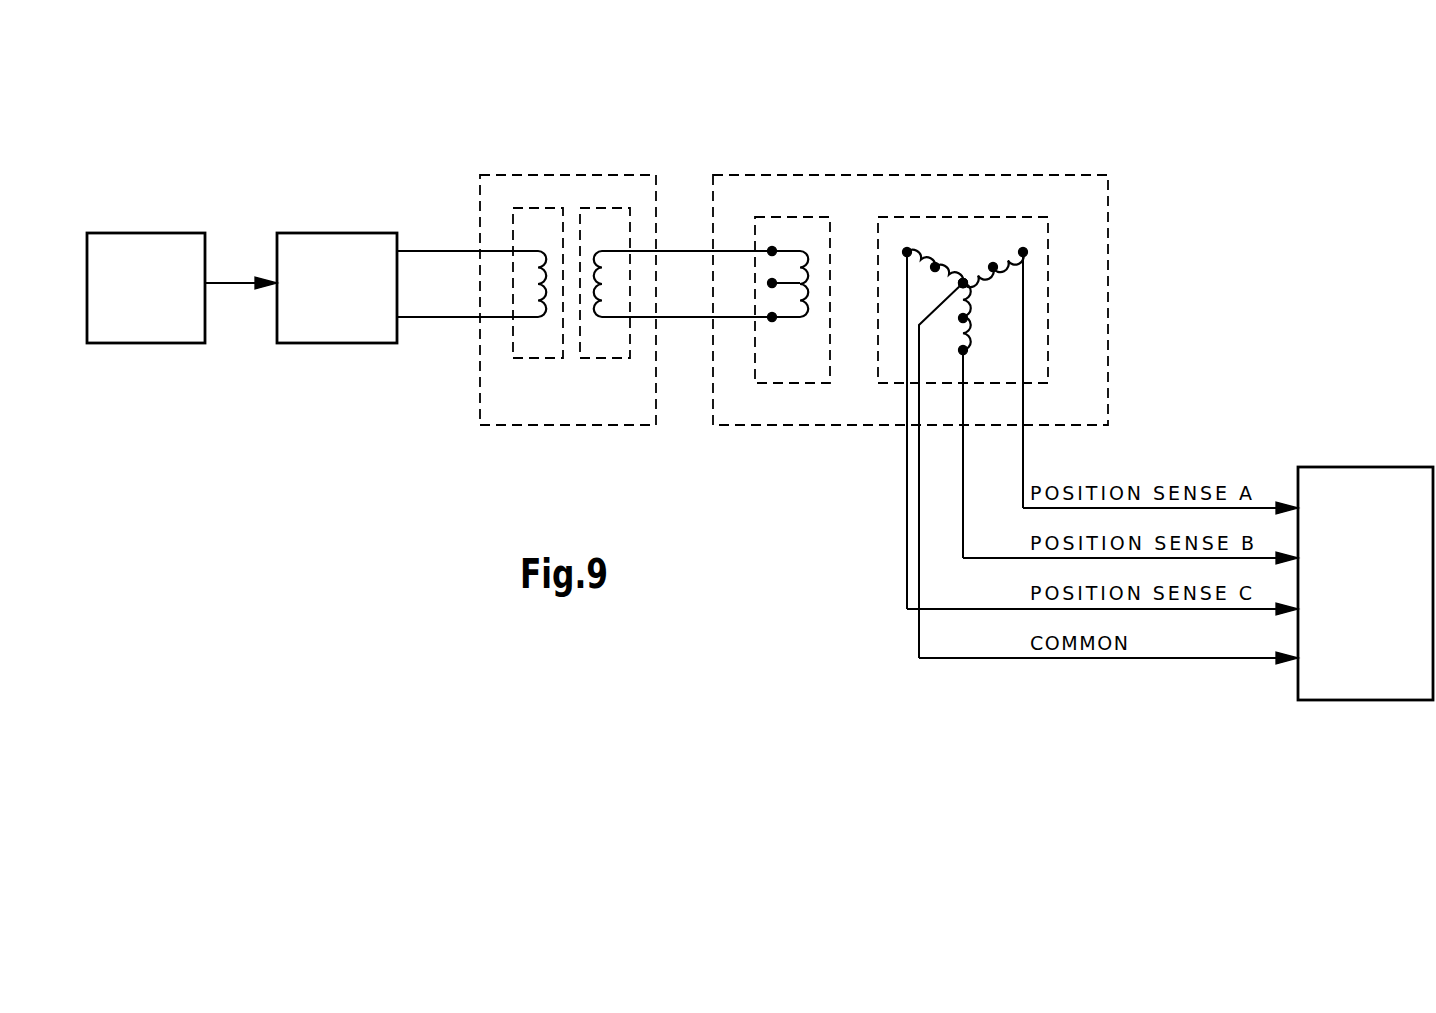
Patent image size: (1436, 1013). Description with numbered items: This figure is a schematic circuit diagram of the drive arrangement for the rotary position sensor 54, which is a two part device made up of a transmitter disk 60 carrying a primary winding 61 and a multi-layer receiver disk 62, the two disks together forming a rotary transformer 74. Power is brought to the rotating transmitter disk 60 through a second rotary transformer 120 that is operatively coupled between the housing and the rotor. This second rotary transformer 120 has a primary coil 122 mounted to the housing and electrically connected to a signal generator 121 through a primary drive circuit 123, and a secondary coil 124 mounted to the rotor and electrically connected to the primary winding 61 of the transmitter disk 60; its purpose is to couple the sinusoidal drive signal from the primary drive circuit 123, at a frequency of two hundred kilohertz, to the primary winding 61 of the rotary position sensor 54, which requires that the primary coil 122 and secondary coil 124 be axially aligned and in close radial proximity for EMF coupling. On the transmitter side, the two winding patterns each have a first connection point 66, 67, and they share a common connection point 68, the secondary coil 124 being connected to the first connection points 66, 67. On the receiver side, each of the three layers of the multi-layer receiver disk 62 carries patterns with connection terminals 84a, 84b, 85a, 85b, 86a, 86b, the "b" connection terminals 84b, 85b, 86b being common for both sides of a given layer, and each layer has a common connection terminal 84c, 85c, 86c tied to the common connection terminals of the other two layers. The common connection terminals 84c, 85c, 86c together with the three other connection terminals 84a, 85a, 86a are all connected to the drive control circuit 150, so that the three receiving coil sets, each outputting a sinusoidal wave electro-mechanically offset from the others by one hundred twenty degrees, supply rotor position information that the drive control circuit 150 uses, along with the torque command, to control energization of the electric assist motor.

The rotary position sensor 54 is at (690, 108).
The transmitter disk 60 is at (806, 216).
The primary winding 61 is at (808, 299).
The multi-layer receiver disk 62 is at (1037, 383).
The first connection point 66 is at (772, 251).
The first connection point 67 is at (772, 317).
The common connection point 68 is at (772, 283).
The rotary transformer 74 is at (900, 175).
The connection terminal 84a is at (1023, 252).
The connection terminal 84b is at (993, 267).
The common connection terminal 84c is at (963, 283).
The connection terminal 85a is at (963, 350).
The connection terminal 85b is at (963, 318).
The common connection terminal 85c is at (963, 283).
The connection terminal 86a is at (907, 252).
The connection terminal 86b is at (935, 267).
The common connection terminal 86c is at (963, 283).
The second rotary transformer 120 is at (547, 175).
The signal generator 121 is at (141, 248).
The primary coil 122 is at (542, 285).
The primary drive circuit 123 is at (333, 242).
The secondary coil 124 is at (600, 285).
The drive control circuit 150 is at (1345, 490).